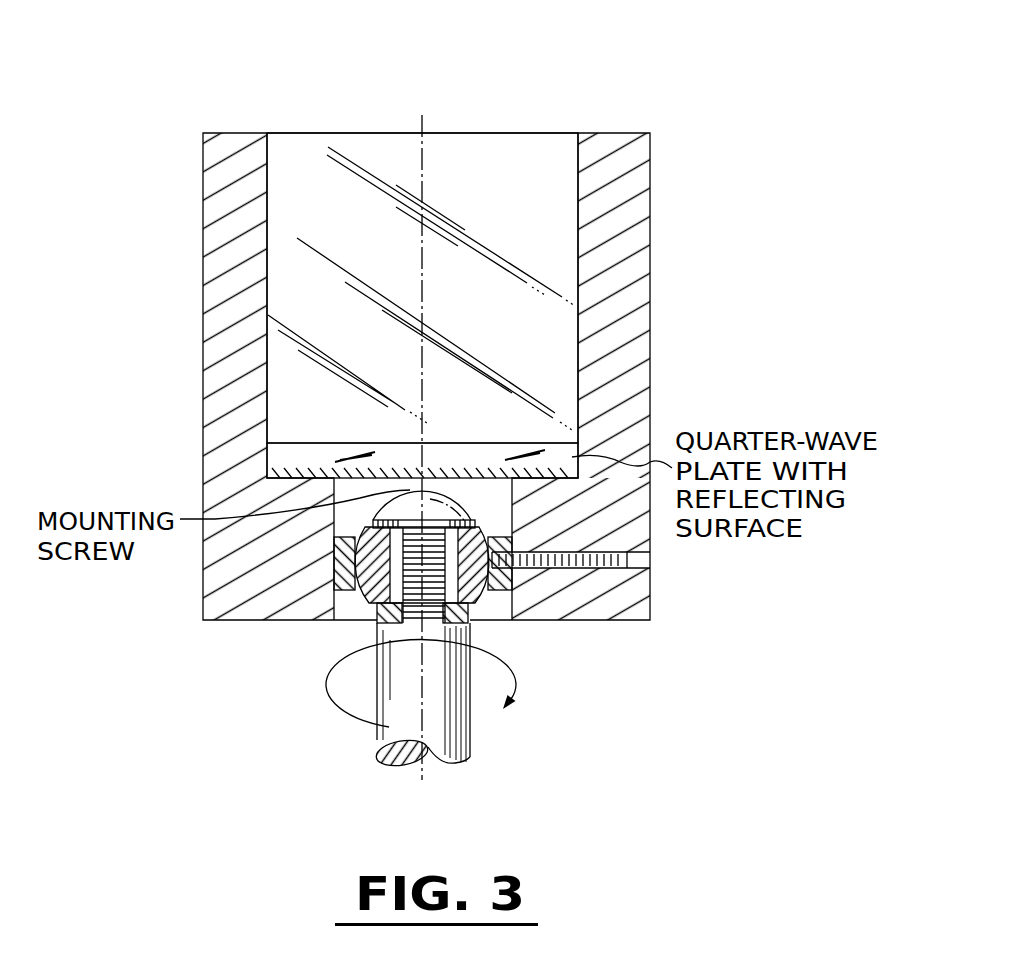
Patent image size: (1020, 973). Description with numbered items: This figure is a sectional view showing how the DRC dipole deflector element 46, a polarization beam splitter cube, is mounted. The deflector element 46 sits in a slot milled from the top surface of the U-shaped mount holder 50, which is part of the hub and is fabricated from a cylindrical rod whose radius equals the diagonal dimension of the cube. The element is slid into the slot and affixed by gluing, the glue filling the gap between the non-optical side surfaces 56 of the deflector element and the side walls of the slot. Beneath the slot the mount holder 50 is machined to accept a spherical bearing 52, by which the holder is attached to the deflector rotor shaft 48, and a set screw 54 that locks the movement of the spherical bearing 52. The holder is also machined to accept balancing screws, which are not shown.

The DRC dipole deflector element 46 is at (480, 147).
The U-shaped mount holder 50 is at (203, 209).
The non-optical side surfaces 56 is at (267, 407).
The set screw 54 is at (645, 562).
The spherical bearing 52 is at (497, 617).
The deflector rotor shaft 48 is at (377, 728).